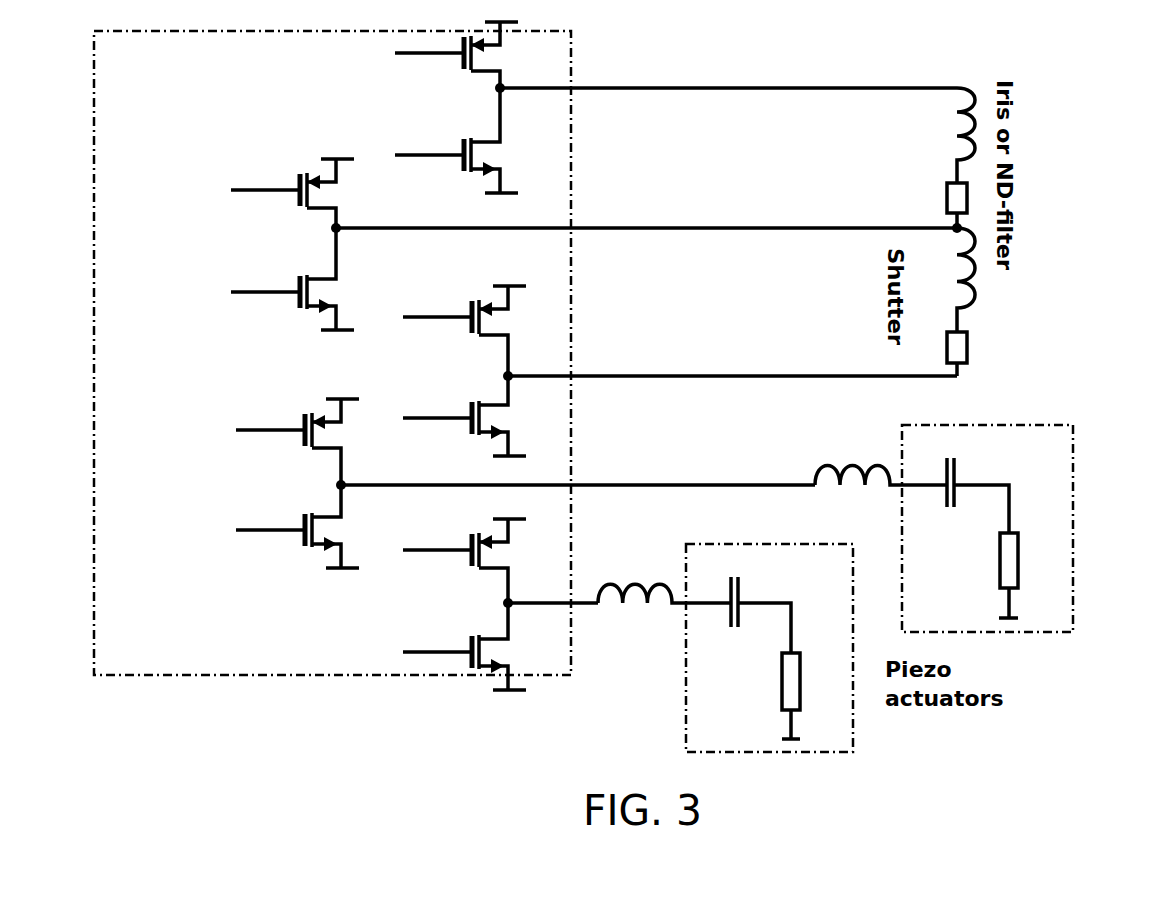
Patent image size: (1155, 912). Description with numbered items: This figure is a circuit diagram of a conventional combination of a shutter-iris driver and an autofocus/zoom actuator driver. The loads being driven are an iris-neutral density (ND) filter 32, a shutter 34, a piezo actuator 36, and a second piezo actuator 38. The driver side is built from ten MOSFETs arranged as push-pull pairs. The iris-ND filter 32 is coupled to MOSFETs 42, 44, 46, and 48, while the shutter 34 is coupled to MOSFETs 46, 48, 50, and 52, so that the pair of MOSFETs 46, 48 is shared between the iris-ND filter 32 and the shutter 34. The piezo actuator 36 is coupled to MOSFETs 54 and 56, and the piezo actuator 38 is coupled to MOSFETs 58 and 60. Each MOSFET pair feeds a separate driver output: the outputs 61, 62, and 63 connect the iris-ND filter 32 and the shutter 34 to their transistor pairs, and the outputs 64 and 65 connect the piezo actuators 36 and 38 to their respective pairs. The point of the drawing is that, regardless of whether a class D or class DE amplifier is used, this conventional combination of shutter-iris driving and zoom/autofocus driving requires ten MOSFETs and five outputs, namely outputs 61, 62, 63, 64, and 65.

The iris-neutral density (ND) filter 32 is at (958, 155).
The shutter 34 is at (972, 298).
The piezo actuator 36 is at (1073, 517).
The piezo actuator 38 is at (853, 720).
The MOSFET 42 is at (465, 70).
The MOSFET 44 is at (465, 143).
The MOSFET 46 is at (296, 182).
The MOSFET 48 is at (296, 280).
The MOSFET 50 is at (466, 305).
The MOSFET 52 is at (470, 410).
The MOSFET 54 is at (300, 425).
The MOSFET 56 is at (300, 525).
The MOSFET 58 is at (470, 542).
The MOSFET 60 is at (472, 638).
The output 61 is at (703, 88).
The output 62 is at (690, 226).
The output 63 is at (705, 377).
The output 64 is at (672, 486).
The output 65 is at (580, 603).